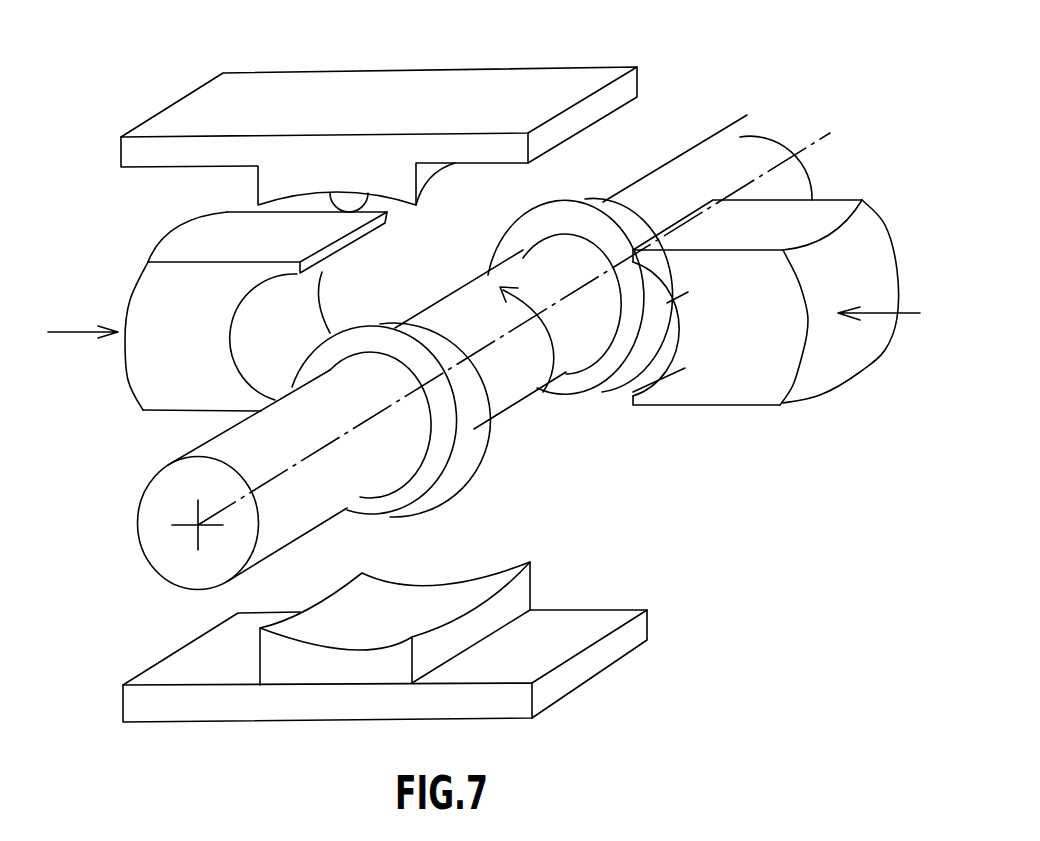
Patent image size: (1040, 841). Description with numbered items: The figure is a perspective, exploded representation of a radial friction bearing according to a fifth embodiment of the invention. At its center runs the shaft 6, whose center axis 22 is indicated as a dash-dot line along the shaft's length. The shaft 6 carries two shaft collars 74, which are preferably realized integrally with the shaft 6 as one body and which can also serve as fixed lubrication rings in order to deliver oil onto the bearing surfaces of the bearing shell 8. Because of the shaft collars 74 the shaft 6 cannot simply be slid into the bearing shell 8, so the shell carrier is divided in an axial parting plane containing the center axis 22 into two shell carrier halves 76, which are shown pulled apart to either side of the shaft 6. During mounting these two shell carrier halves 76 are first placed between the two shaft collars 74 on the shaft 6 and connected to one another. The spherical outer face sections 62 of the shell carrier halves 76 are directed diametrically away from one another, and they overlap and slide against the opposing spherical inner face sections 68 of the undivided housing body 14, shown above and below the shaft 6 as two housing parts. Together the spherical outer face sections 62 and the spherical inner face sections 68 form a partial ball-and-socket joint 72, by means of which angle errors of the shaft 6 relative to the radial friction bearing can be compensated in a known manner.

The shaft 6 is at (740, 137).
The bearing shell 8 is at (295, 305).
The housing body 14 is at (627, 87).
The center axis 22 is at (830, 133).
The spherical outer face sections 62 is at (122, 305).
The spherical inner face sections 68 is at (353, 207).
The partial ball-and-socket joint 72 is at (810, 550).
The shaft collars 74 is at (453, 465).
The shell carrier halves 76 is at (163, 372).